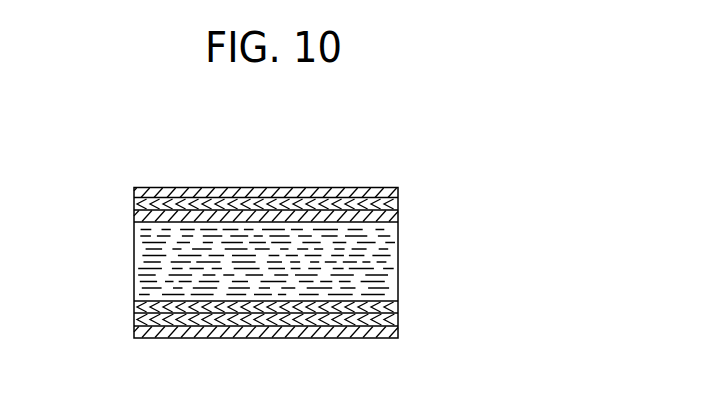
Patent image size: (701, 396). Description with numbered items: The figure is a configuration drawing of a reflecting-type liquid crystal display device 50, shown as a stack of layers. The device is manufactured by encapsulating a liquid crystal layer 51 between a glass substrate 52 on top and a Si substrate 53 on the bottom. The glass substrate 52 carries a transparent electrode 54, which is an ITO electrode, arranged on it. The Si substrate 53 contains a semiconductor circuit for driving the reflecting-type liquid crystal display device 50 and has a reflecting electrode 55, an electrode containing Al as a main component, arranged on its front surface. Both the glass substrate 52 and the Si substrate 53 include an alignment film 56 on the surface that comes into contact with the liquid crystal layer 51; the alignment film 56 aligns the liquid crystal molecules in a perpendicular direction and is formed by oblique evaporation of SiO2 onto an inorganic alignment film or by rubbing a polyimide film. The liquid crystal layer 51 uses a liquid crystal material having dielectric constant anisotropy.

The reflecting-type liquid crystal display device 50 is at (340, 135).
The liquid crystal layer 51 is at (398, 261).
The glass substrate 52 is at (398, 192).
The Si substrate 53 is at (398, 333).
The transparent electrode 54 is at (398, 203).
The reflecting electrode 55 is at (398, 318).
The alignment film 56 is at (135, 220).